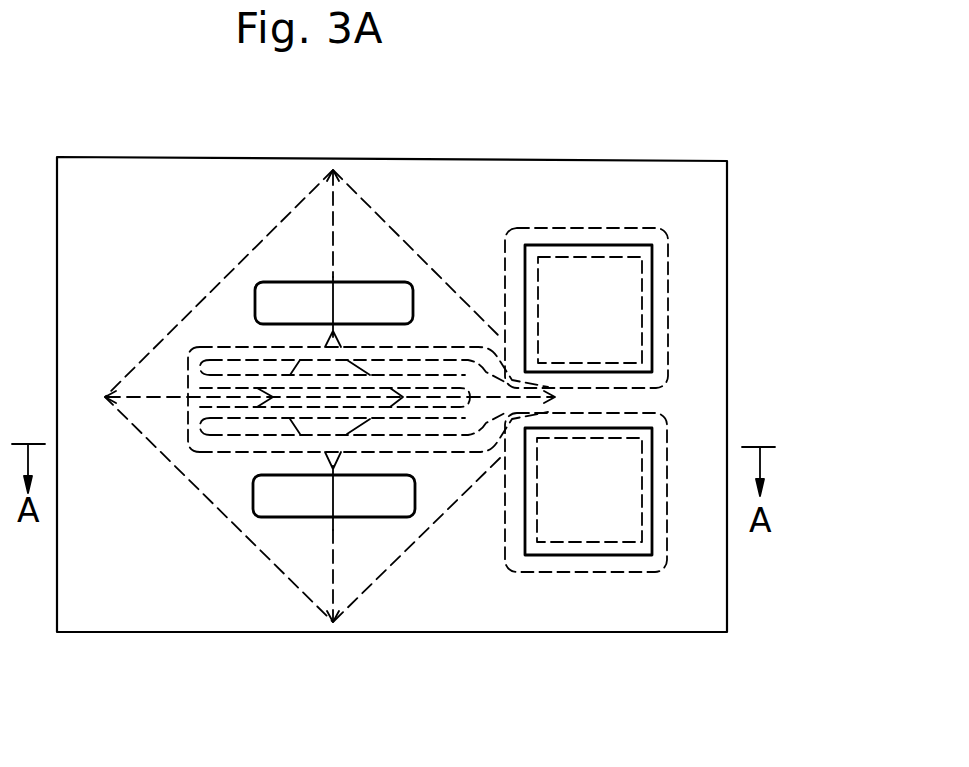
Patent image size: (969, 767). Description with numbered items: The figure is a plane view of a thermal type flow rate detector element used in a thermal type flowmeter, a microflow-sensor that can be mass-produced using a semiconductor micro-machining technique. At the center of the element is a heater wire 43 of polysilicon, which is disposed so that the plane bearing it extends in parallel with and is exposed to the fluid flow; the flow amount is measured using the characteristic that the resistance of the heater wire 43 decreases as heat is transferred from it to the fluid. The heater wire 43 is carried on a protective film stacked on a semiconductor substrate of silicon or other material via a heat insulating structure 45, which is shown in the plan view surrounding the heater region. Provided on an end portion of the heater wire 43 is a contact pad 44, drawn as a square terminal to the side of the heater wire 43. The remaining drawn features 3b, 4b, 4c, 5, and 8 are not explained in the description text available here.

The substrate 3b is at (707, 223).
The lower insulating layer 4b is at (663, 548).
The upper insulating layer 4c is at (486, 351).
The terminal opening 5 is at (613, 257).
The magnetic pole piece 8 is at (405, 283).
The heater wire 43 is at (256, 345).
The contact pad 44 is at (653, 313).
The heat insulating structure 45 is at (295, 582).